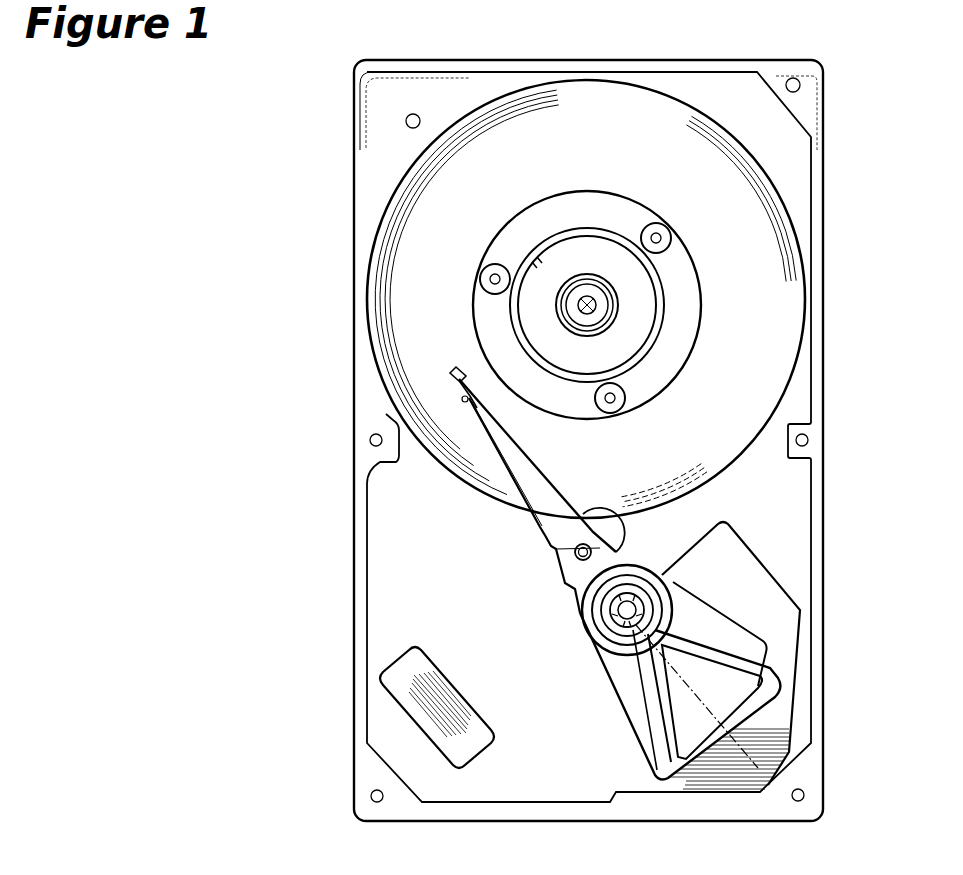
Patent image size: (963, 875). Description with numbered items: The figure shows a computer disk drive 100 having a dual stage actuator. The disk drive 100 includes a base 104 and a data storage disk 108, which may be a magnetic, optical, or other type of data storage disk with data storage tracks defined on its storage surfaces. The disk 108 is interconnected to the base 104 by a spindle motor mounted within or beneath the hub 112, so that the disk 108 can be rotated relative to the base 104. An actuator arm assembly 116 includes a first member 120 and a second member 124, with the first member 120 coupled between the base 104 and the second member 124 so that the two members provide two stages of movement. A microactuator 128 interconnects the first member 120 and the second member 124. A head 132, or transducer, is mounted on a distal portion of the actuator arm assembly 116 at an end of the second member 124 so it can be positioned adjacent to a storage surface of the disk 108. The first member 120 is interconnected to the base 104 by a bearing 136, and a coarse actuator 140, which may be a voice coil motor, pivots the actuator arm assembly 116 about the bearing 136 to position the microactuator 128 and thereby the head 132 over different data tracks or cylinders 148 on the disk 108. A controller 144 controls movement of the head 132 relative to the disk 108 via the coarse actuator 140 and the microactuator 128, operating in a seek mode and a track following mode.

The disk drive 100 is at (601, 48).
The base 104 is at (800, 512).
The data storage disk 108 is at (783, 278).
The hub 112 is at (575, 318).
The actuator arm assembly 116 is at (490, 461).
The first member 120 is at (514, 492).
The second member 124 is at (462, 390).
The microactuator 128 is at (469, 404).
The head 132 is at (452, 370).
The bearing 136 is at (612, 617).
The coarse actuator 140 is at (678, 760).
The controller 144 is at (450, 690).
The data tracks or cylinders 148 is at (524, 100).